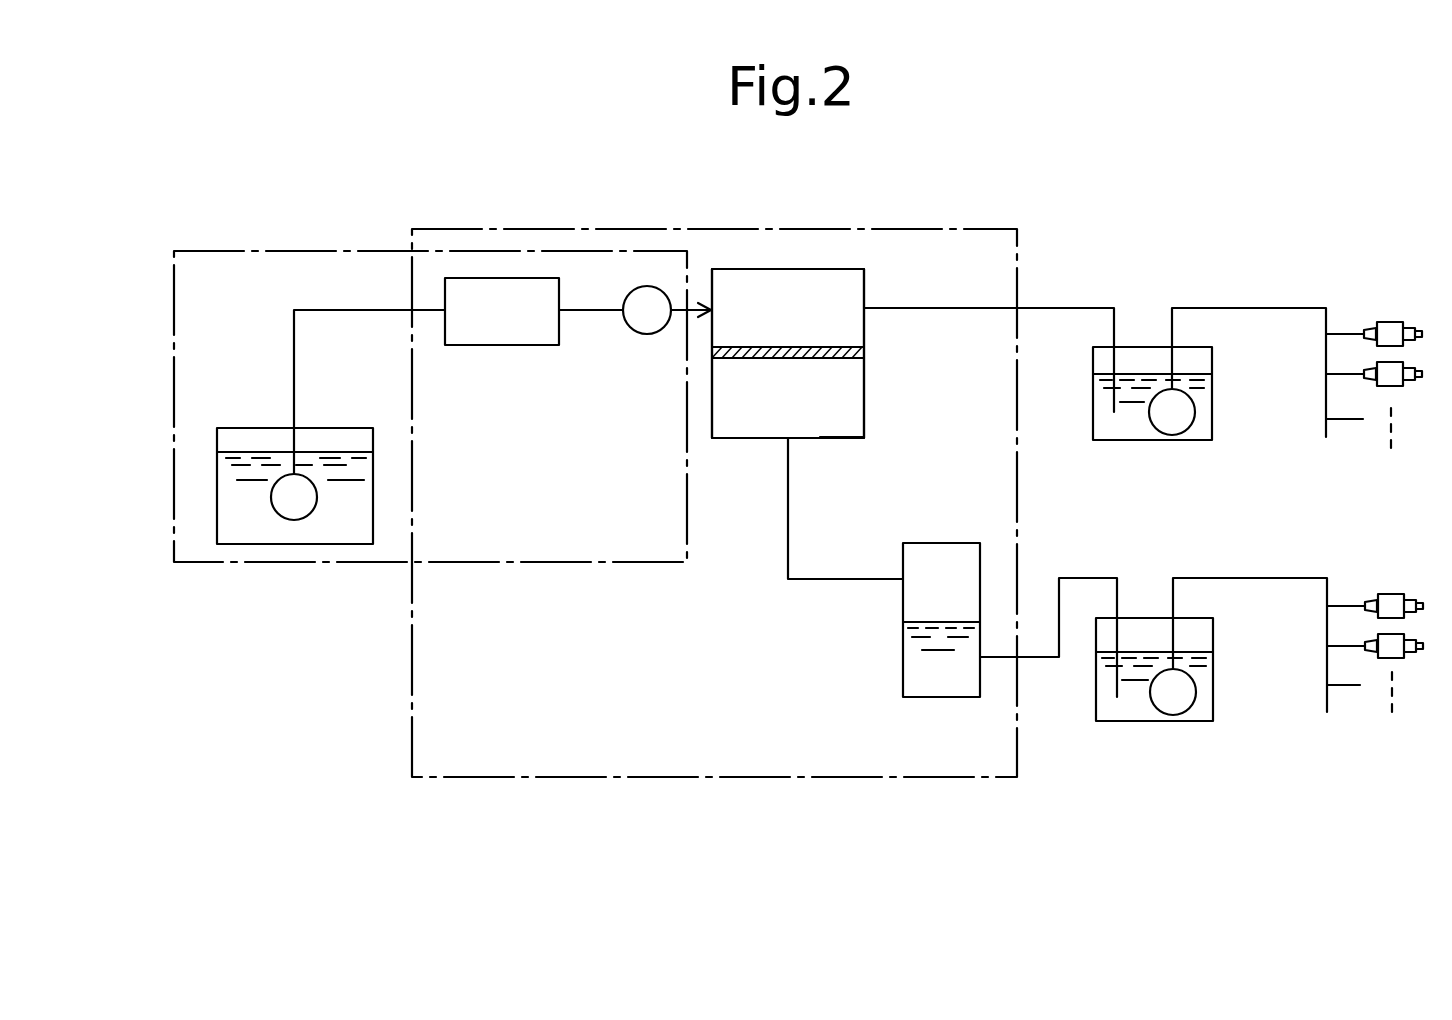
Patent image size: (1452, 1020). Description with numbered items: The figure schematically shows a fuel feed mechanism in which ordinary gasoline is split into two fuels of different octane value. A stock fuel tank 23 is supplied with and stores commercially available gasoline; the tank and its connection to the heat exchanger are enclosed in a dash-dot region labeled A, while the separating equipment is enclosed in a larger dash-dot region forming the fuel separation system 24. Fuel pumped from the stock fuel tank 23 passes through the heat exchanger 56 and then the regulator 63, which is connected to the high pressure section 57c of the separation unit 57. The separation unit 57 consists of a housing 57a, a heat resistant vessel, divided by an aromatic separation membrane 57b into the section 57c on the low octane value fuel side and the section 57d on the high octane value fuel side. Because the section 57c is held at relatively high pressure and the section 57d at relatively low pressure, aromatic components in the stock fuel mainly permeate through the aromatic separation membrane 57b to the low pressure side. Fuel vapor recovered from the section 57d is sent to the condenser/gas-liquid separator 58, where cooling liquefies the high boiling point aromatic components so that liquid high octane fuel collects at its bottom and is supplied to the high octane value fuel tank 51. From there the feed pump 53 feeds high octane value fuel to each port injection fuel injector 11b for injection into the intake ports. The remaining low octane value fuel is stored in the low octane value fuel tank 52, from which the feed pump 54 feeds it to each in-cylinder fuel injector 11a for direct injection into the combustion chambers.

The water supply section A is at (218, 250).
The fuel separation system 24 is at (893, 226).
The stock fuel tank 23 is at (216, 508).
The heat exchanger 56 is at (496, 346).
The regulator 63 is at (638, 334).
The separation unit 57 is at (830, 385).
The housing 57a is at (866, 410).
The aromatic separation membrane 57b is at (845, 357).
The section 57c is at (851, 291).
The section 57d is at (830, 432).
The condenser/gas-liquid separator 58 is at (936, 542).
The low octane value fuel tank 52 is at (1144, 433).
The feed pump 54 is at (1188, 418).
The high octane value fuel tank 51 is at (1150, 715).
The feed pump 53 is at (1190, 690).
The in-cylinder fuel injector 11a is at (1394, 321).
The port injection fuel injector 11b is at (1390, 593).